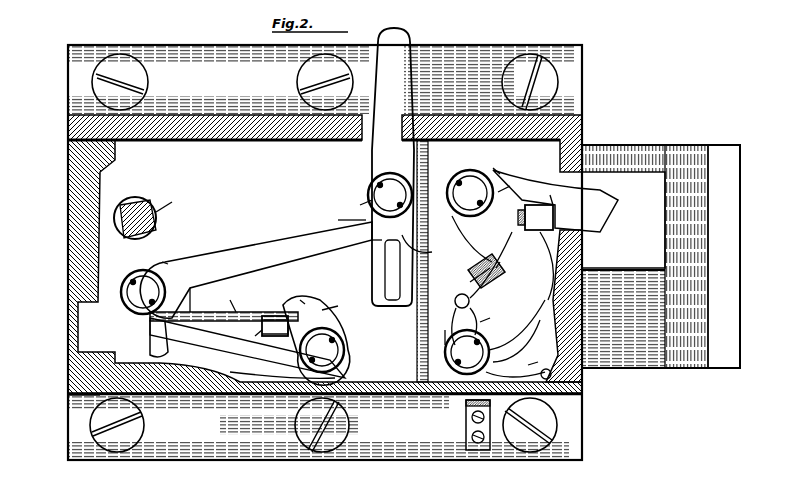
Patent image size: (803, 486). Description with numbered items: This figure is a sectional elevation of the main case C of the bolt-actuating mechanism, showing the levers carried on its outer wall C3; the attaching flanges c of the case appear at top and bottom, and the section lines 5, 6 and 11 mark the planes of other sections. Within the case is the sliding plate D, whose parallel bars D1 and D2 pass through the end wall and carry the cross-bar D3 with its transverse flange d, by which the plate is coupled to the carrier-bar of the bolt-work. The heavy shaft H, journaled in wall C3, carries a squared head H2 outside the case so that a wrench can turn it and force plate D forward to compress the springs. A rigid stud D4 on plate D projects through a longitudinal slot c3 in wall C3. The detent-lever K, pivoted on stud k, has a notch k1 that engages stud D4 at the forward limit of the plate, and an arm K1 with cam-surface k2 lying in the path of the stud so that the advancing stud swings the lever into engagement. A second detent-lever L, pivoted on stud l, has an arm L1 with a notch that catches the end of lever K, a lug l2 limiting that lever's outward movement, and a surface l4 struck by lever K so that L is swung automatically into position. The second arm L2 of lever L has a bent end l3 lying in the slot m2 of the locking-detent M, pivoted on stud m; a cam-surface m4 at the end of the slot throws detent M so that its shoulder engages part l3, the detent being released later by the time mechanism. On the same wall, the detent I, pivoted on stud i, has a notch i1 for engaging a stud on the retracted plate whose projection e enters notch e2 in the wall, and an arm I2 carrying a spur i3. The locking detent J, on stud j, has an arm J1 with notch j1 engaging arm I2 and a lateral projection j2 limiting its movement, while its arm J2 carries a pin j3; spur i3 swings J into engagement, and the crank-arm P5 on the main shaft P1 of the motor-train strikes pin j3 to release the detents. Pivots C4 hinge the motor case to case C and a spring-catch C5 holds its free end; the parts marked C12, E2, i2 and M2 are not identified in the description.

The case C is at (309, 252).
The attaching flanges c is at (321, 252).
The outer wall of the case C3 is at (325, 254).
The pivot C4 is at (84, 403).
The spring-catch C5 is at (466, 412).
The case front wall piece C12 is at (582, 380).
The sliding plate D is at (272, 312).
The bar D1 is at (624, 318).
The bar D2 is at (632, 160).
The cross-bar D3 is at (678, 256).
The stud D4 is at (275, 326).
The transverse flange d is at (724, 256).
The stop block E2 is at (535, 217).
The projection e is at (547, 266).
The notch e2 is at (499, 164).
The shaft H is at (135, 209).
The squared head H2 is at (172, 202).
The detent I is at (504, 181).
The detent arm I2 is at (555, 233).
The stud i is at (470, 193).
The notch i1 is at (552, 192).
The tumbler link i2 is at (493, 262).
The spur i3 is at (487, 315).
The locking detent J is at (439, 334).
The detent arm J1 is at (538, 357).
The detent arm J2 is at (454, 322).
The stud j is at (467, 352).
The notch j1 is at (518, 365).
The lateral projection j2 is at (517, 322).
The pin j3 is at (455, 297).
The detent-lever K is at (315, 340).
The arm K1 is at (337, 305).
The stud k is at (322, 350).
The notch k1 is at (254, 340).
The cam-surface k2 is at (306, 295).
The second detent-lever L is at (167, 270).
The arm L1 is at (152, 338).
The second arm L2 is at (256, 270).
The stud l is at (143, 292).
The lug l2 is at (247, 348).
The bent end l3 is at (369, 235).
The projecting surface l4 is at (201, 300).
The slot c3 is at (237, 302).
The locking-detent M is at (358, 203).
The actuating lever arm M2 is at (366, 285).
The stud m is at (390, 195).
The slot m2 is at (390, 322).
The cam-surface m4 is at (344, 215).
The main shaft P1 is at (478, 252).
The crank-arm P5 is at (503, 261).
The section line 5 is at (792, 328).
The section line 6 is at (792, 219).
The section line 11 is at (433, 485).